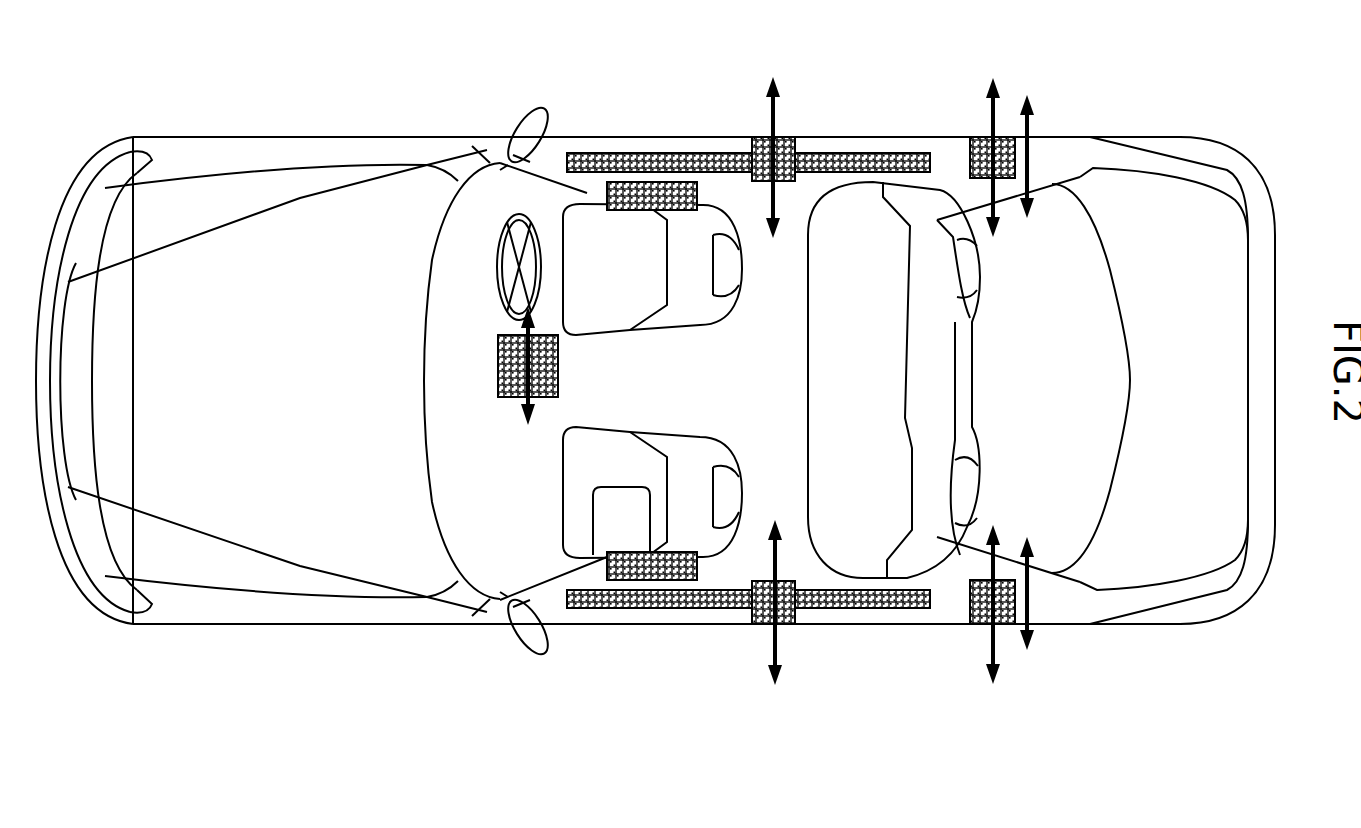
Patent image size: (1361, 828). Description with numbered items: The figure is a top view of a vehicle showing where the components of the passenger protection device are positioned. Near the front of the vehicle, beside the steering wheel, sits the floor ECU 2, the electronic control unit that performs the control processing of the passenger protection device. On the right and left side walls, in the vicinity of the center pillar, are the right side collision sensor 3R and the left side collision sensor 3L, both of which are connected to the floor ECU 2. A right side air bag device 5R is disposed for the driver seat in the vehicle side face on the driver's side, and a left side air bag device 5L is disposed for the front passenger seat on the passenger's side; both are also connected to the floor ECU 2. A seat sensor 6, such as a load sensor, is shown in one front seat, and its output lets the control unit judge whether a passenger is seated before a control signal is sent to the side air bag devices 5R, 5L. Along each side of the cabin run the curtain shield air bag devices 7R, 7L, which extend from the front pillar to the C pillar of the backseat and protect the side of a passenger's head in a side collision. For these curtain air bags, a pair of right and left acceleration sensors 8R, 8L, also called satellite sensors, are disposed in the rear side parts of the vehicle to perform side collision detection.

The floor ECU 2 is at (498, 355).
The right side collision sensor 3R is at (785, 150).
The left side collision sensor 3L is at (790, 610).
The right side air bag device 5R is at (647, 192).
The left side air bag device 5L is at (645, 567).
The seat sensor 6 is at (603, 528).
The right curtain shield air bag device 7R is at (717, 157).
The left curtain shield air bag device 7L is at (720, 602).
The right acceleration sensor (satellite sensor) 8R is at (980, 152).
The left acceleration sensor (satellite sensor) 8L is at (983, 595).